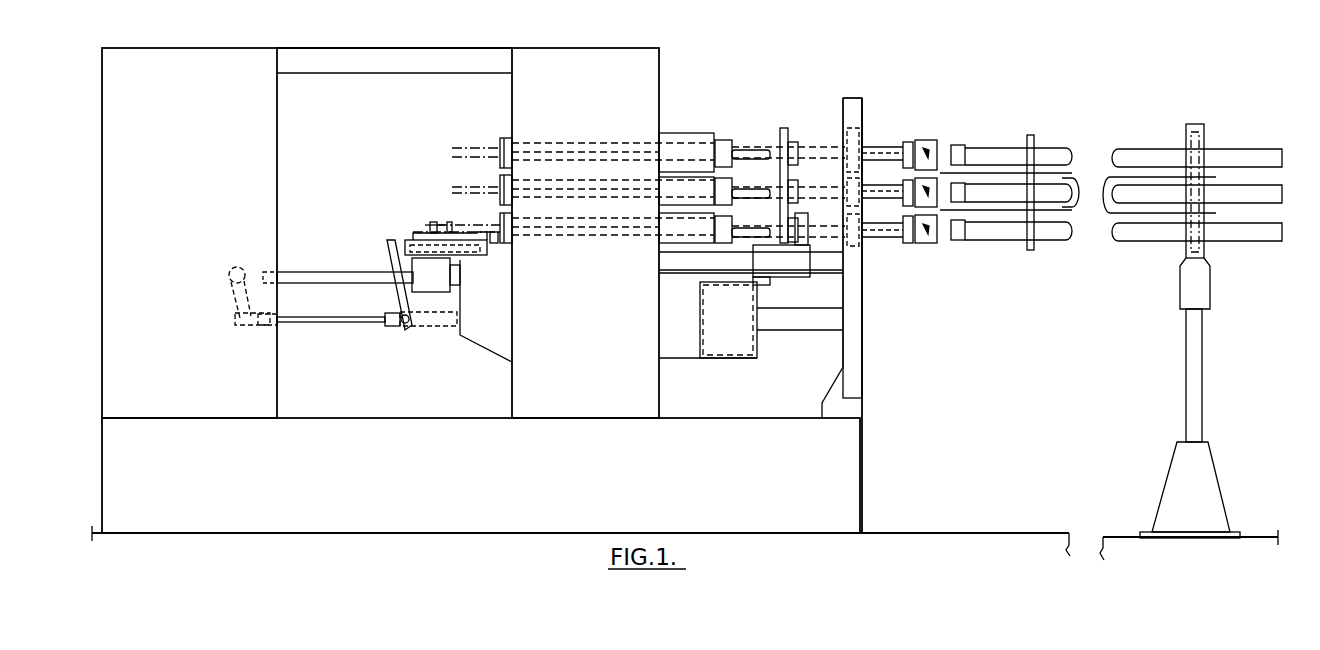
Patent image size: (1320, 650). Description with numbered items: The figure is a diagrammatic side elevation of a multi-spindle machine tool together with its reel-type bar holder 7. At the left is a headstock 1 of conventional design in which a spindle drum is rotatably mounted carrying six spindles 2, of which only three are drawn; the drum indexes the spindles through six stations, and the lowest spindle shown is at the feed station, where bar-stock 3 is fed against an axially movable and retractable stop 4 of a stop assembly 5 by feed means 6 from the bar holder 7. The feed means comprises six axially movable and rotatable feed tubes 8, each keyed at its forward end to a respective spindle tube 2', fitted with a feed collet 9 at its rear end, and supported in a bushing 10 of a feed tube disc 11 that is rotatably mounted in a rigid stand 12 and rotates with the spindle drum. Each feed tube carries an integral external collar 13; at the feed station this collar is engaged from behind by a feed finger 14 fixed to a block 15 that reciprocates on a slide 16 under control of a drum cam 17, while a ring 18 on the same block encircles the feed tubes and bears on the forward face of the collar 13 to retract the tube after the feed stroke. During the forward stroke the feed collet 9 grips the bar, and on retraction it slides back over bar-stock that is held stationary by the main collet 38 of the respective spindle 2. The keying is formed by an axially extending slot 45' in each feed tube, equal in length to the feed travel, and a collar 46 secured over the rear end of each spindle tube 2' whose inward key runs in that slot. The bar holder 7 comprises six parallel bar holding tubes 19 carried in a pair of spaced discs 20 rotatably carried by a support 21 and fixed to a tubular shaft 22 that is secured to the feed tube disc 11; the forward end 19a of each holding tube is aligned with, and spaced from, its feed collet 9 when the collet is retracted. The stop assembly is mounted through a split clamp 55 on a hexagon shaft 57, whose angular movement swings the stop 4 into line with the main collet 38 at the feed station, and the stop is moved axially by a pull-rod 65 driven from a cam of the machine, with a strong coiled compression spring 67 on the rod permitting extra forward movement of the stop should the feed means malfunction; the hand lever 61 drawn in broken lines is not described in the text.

The headstock 1 is at (590, 62).
The spindles 2 is at (678, 193).
The spindle tube 2' is at (585, 190).
The bar-stock 3 is at (470, 232).
The stop 4 is at (445, 221).
The stop assembly 5 is at (425, 218).
The feed means 6 is at (826, 133).
The bar holder 7 is at (1060, 133).
The feed tubes 8 is at (835, 148).
The feed collet 9 is at (929, 142).
The bushing 10 is at (868, 143).
The feed tube disc 11 is at (860, 139).
The rigid stand 12 is at (850, 380).
The external collar 13 is at (797, 146).
The feed finger 14 is at (808, 250).
The block 15 is at (783, 275).
The slide 16 is at (680, 262).
The drum cam 17 is at (728, 345).
The ring 18 is at (785, 128).
The bar holding tubes 19 is at (1145, 151).
The forward end of bar holding tube 19a is at (961, 147).
The discs 20 is at (1032, 135).
The support 21 is at (1190, 400).
The tubular shaft 22 is at (1073, 176).
The main collet 38 is at (501, 190).
The slot 45' is at (740, 214).
The collar 46 is at (722, 139).
The split clamp 55 is at (430, 294).
The hexagon shaft 57 is at (322, 271).
The hand lever 61 is at (257, 327).
The pull-rod 65 is at (322, 323).
The compression spring 67 is at (412, 328).